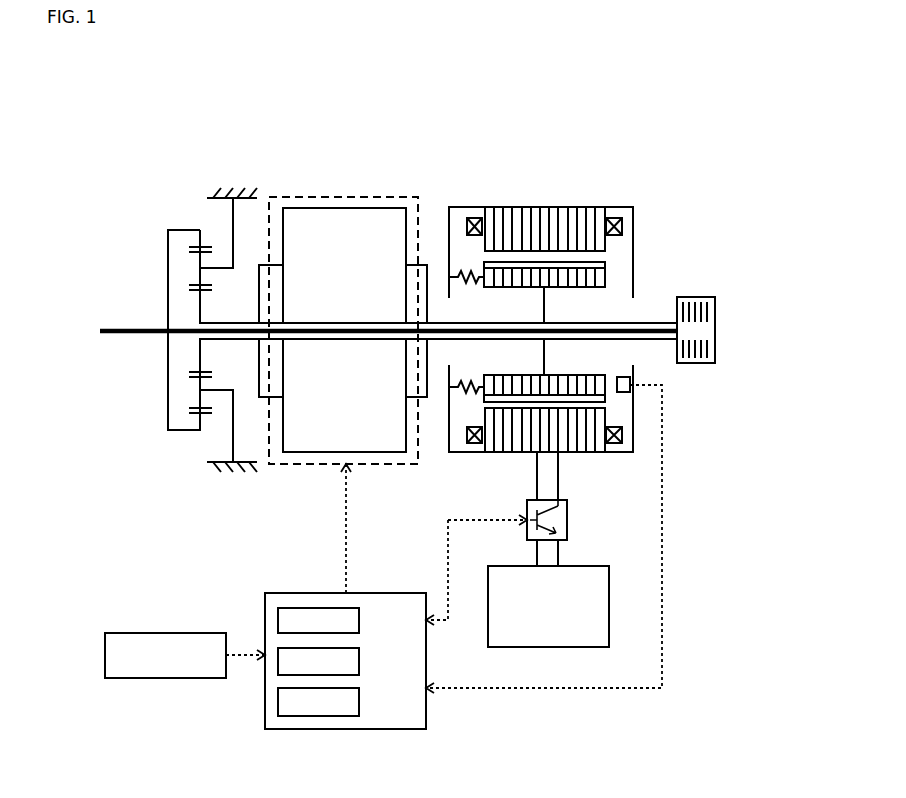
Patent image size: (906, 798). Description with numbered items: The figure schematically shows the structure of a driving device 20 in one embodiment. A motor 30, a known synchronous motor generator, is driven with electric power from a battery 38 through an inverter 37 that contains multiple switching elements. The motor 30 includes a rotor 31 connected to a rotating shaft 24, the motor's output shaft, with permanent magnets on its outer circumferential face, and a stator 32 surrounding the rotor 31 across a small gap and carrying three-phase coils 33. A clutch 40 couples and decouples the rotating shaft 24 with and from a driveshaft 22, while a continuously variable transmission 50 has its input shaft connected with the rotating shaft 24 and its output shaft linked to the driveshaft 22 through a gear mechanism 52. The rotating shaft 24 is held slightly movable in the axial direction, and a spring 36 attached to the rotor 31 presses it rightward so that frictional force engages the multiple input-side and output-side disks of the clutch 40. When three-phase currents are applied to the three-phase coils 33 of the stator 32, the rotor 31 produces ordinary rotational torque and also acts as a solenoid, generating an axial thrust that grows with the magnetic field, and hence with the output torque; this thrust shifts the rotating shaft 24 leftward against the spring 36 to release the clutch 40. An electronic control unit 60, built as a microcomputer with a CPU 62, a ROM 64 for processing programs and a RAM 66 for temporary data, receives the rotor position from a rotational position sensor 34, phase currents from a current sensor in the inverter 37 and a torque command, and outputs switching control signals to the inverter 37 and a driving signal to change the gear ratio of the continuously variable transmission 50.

The driving device 20 is at (588, 91).
The driveshaft 22 is at (130, 325).
The rotating shaft 24 is at (636, 322).
The motor 30 is at (590, 207).
The rotor 31 is at (605, 270).
The stator 32 is at (550, 207).
The three-phase coils 33 is at (614, 224).
The rotational position sensor 34 is at (630, 374).
The spring 36 is at (472, 272).
The inverter 37 is at (568, 503).
The battery 38 is at (586, 566).
The clutch 40 is at (715, 308).
The continuously variable transmission 50 is at (343, 197).
The gear mechanism 52 is at (169, 212).
The electronic control unit 60 is at (347, 729).
The CPU 62 is at (359, 620).
The ROM 64 is at (359, 660).
The RAM 66 is at (359, 700).